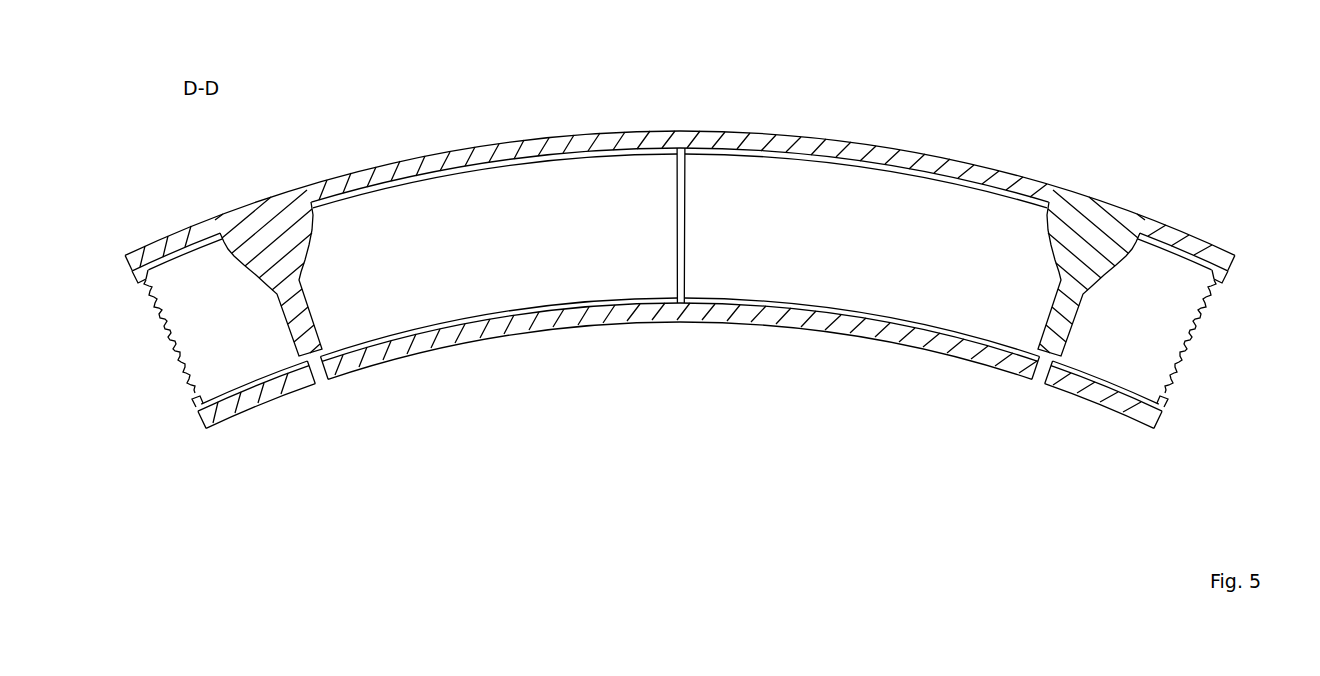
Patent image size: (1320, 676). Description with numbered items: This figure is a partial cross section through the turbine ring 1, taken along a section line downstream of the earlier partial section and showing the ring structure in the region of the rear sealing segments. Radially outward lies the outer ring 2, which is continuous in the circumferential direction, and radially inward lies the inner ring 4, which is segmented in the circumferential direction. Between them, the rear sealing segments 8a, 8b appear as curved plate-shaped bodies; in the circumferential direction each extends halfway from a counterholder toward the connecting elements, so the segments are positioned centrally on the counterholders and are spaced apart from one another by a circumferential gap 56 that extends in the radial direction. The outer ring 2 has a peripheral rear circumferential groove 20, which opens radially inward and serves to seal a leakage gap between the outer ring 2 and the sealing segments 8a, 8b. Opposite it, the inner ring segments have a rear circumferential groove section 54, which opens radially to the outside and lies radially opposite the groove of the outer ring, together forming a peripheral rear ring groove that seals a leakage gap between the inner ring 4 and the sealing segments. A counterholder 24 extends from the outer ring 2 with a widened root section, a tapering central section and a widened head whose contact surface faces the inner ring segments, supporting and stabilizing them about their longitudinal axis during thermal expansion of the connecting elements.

The turbine ring 1 is at (128, 31).
The outer ring 2 is at (1233, 275).
The inner ring 4 is at (1173, 413).
The rear sealing segment 8a is at (565, 278).
The rear sealing segment 8b is at (802, 275).
The rear circumferential groove 20 is at (137, 282).
The counterholder 24 is at (1067, 295).
The rear circumferential groove section 54 is at (195, 398).
The circumferential gap 56 is at (682, 273).